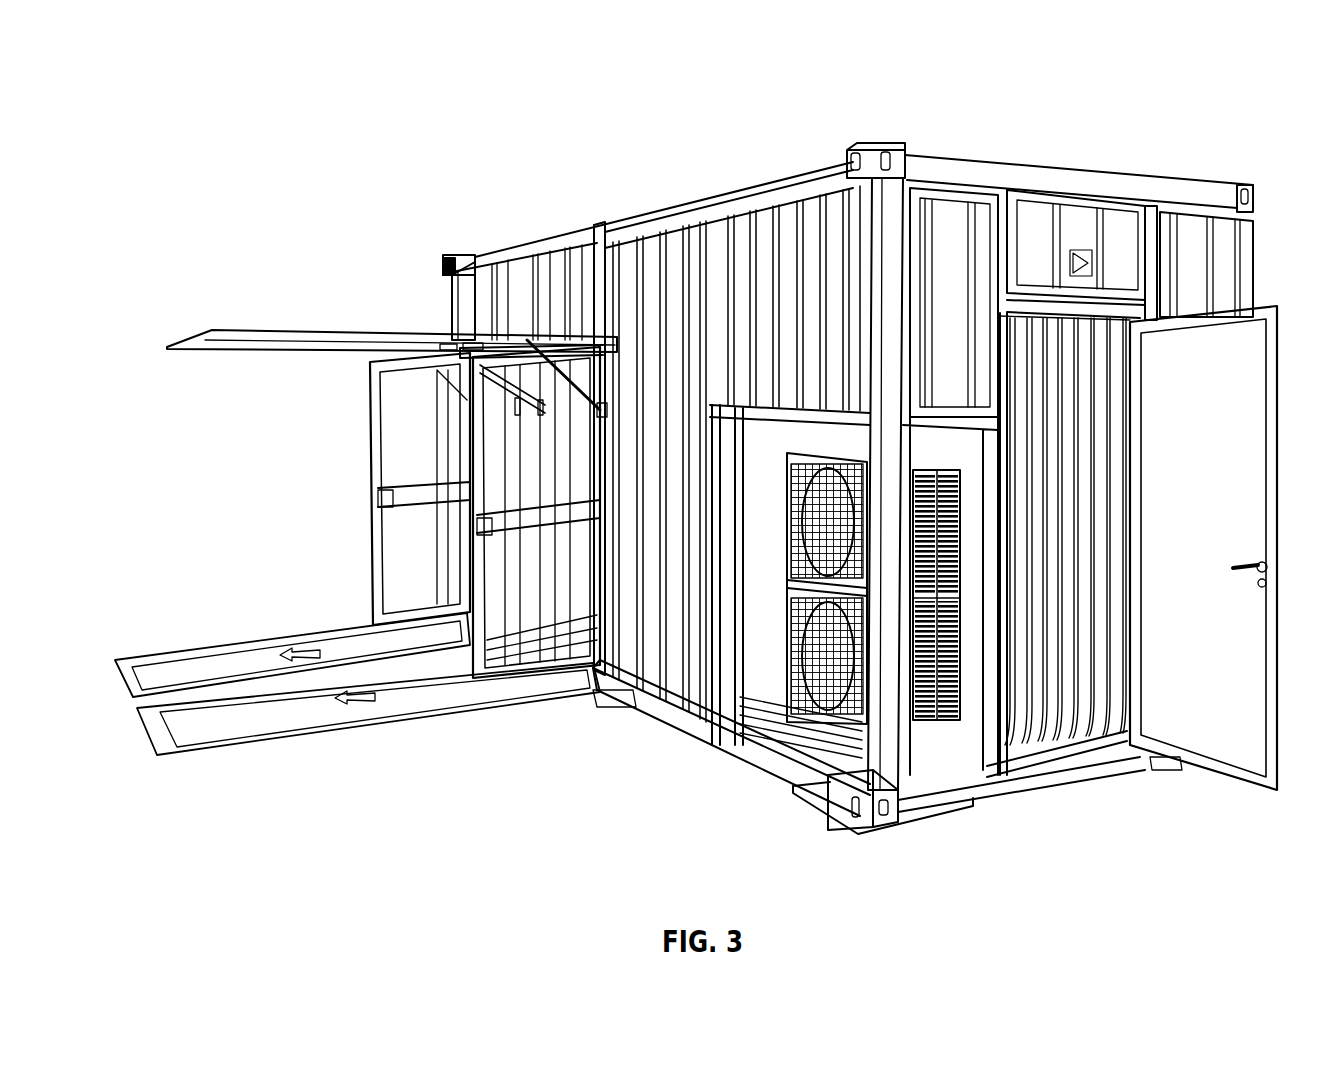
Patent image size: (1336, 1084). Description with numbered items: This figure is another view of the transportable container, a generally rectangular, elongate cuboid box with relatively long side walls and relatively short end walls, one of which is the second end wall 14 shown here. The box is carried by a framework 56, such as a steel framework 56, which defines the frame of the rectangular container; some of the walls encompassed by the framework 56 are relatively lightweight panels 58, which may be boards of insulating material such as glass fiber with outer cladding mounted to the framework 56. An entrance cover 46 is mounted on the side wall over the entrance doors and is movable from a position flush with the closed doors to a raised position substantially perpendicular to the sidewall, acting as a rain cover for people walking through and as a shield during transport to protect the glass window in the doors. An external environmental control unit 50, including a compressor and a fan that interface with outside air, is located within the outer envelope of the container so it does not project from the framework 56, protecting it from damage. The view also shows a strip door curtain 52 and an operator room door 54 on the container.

The second end wall 14 is at (940, 224).
The entrance cover 46 is at (300, 347).
The external environmental control unit 50 is at (955, 700).
The strip door curtain 52 is at (1083, 720).
The operator room door 54 is at (1228, 356).
The framework 56 is at (605, 228).
The panel 58 is at (742, 256).